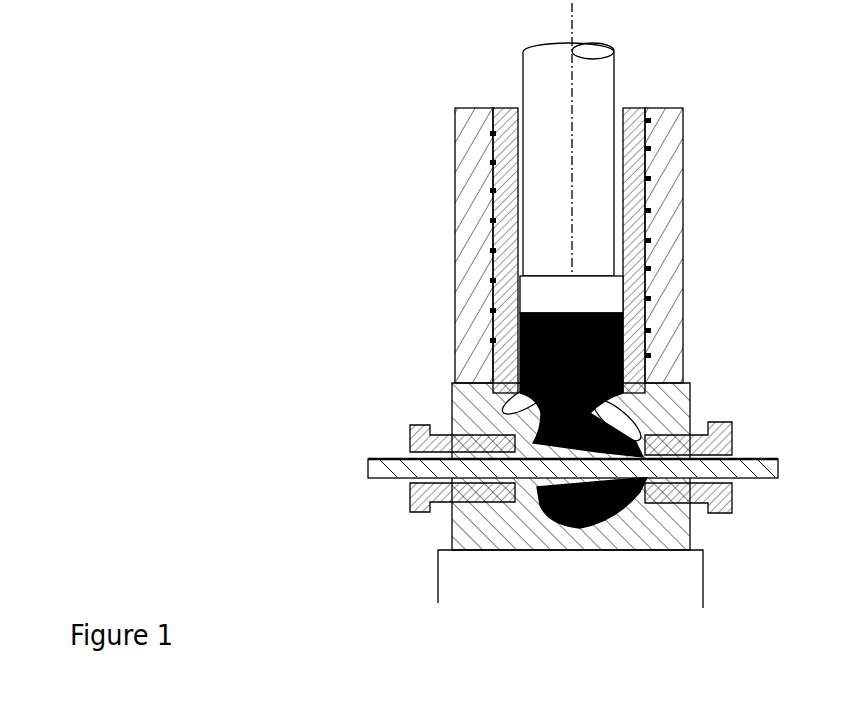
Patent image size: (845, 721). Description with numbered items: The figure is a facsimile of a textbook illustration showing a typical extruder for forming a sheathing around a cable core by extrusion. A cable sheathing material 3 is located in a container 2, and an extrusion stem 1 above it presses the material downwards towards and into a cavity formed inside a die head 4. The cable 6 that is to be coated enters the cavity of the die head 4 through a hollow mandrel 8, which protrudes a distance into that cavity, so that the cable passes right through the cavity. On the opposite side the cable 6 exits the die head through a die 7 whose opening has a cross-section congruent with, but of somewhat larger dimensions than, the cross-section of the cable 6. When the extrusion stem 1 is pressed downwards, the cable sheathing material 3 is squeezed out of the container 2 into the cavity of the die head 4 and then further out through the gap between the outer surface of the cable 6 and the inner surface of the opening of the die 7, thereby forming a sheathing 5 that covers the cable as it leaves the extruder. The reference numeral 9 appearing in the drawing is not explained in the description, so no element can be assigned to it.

The extrusion stem 1 is at (598, 73).
The container 2 is at (683, 197).
The cable sheathing material 3 is at (625, 336).
The die head 4 is at (636, 463).
The sheathing 5 is at (752, 456).
The cable 6 is at (770, 468).
The die 7 is at (660, 550).
The hollow mandrel 8 is at (584, 525).
The coating layer 9 is at (586, 527).